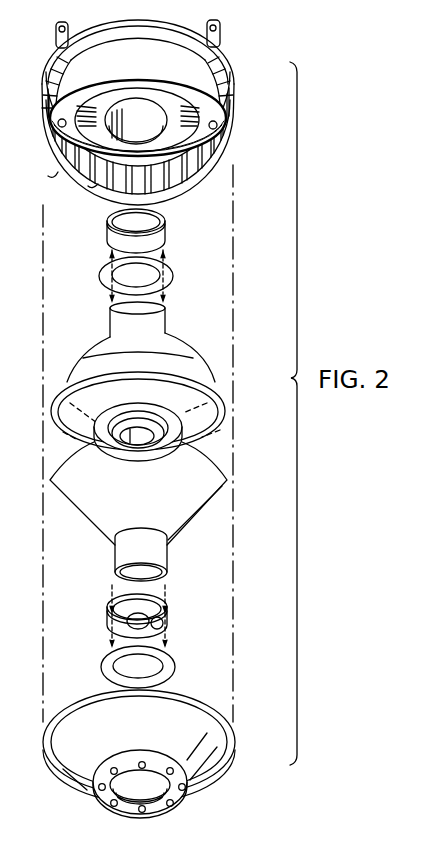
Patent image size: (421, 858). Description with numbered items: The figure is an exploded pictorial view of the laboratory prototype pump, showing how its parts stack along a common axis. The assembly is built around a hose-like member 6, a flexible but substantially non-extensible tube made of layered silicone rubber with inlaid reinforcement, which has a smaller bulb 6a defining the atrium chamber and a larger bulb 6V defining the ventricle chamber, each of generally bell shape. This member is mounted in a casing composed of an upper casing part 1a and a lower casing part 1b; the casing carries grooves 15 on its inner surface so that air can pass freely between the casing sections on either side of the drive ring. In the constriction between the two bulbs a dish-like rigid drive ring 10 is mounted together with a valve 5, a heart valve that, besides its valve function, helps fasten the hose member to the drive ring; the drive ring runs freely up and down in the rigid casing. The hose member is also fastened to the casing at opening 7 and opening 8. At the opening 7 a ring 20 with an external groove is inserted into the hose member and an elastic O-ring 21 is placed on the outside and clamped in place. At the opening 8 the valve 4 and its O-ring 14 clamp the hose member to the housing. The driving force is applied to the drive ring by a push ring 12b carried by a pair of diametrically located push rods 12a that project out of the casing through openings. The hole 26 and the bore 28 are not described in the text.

The casing part 1a is at (227, 97).
The casing part 1b is at (227, 733).
The push rods 12a is at (218, 39).
The push ring 12b is at (208, 149).
The grooves 15 is at (92, 186).
The central opening 26 is at (111, 97).
The ring 20 is at (164, 220).
The O-ring 21 is at (172, 273).
The opening 7 is at (164, 322).
The smaller bulb 6a is at (173, 353).
The drive ring 10 is at (217, 387).
The valve 5 is at (147, 427).
The hub bore 28 is at (82, 432).
The hose-like member 6 is at (90, 531).
The larger bulb 6V is at (182, 526).
The opening 8 is at (164, 549).
The valve 4 is at (167, 616).
The O-ring 14 is at (168, 661).